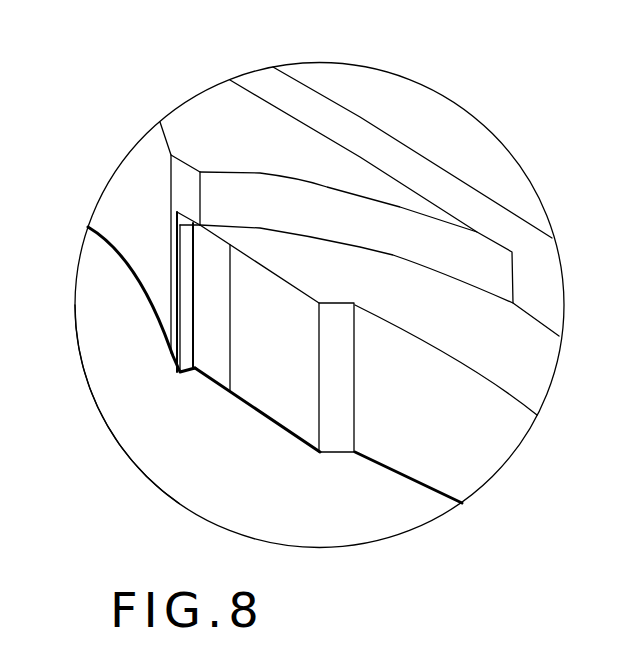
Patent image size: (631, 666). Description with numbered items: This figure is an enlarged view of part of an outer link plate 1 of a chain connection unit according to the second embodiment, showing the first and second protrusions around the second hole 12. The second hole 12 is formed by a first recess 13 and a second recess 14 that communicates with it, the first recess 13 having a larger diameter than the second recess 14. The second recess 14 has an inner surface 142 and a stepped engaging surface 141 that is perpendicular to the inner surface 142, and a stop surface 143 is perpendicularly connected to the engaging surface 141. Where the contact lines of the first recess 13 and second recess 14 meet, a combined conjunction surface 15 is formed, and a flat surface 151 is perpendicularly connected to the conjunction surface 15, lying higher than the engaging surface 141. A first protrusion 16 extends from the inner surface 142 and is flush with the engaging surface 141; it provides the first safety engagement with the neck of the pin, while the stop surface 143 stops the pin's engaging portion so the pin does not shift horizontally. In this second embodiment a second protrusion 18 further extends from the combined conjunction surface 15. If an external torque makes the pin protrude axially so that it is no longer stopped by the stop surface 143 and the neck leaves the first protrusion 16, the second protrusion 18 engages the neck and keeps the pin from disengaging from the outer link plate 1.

The outer link plate 1 is at (422, 128).
The second hole 12 is at (107, 382).
The first recess 13 is at (100, 240).
The second recess 14 is at (388, 467).
The combined conjunction surface 15 is at (218, 352).
The first protrusion 16 is at (333, 433).
The second protrusion 18 is at (183, 257).
The engaging surface 141 is at (462, 320).
The inner surface 142 is at (488, 448).
The stop surface 143 is at (328, 210).
The flat surface 151 is at (242, 125).